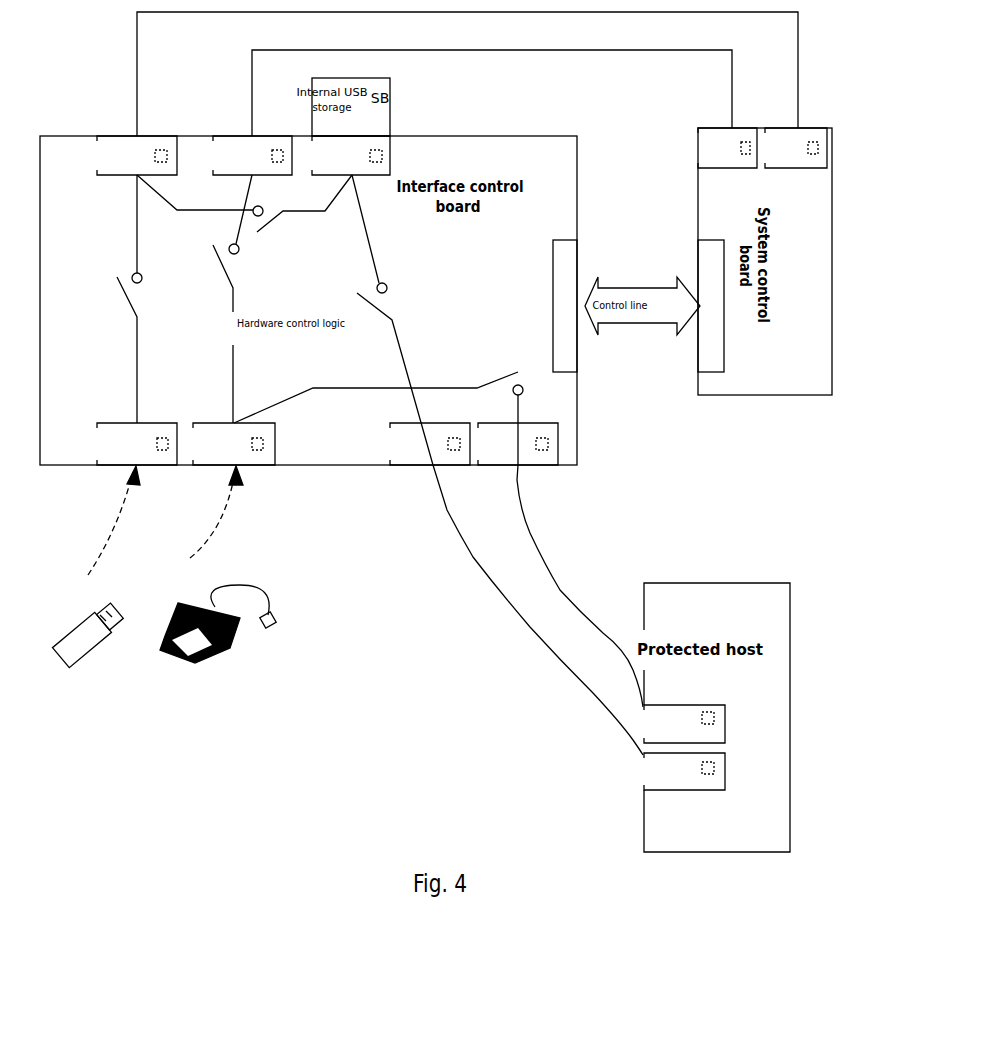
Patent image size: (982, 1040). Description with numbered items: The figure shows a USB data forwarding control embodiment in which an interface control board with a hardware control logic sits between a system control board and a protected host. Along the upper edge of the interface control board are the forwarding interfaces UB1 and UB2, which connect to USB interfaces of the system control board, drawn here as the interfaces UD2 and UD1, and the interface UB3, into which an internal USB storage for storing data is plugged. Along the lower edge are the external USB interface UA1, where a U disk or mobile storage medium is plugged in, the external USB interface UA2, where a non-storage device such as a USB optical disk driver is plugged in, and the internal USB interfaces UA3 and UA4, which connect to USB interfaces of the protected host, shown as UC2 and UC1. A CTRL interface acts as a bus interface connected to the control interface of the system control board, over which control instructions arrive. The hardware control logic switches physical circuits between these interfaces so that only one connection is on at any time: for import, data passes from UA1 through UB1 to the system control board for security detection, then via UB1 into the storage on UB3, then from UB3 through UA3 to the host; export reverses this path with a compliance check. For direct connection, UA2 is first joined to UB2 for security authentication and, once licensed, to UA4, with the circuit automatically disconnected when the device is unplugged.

The forwarding interface UB1 is at (132, 137).
The forwarding interface UB2 is at (247, 137).
The USB interface for internal USB storage UB3 is at (377, 135).
The external USB interface UA1 is at (132, 460).
The external USB interface UA2 is at (229, 460).
The internal USB interface UA3 is at (425, 460).
The internal USB interface UA4 is at (512, 460).
The USB interface of system control board (first) UD1 is at (795, 134).
The USB interface of system control board (second) UD2 is at (729, 134).
The USB interface of protected host (first) UC1 is at (666, 724).
The USB interface of protected host (second) UC2 is at (666, 771).
The CTRL interface CTRL is at (543, 306).